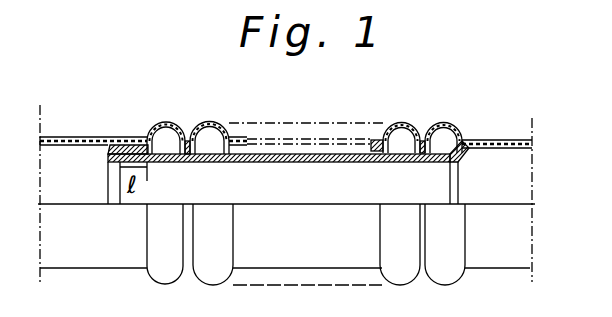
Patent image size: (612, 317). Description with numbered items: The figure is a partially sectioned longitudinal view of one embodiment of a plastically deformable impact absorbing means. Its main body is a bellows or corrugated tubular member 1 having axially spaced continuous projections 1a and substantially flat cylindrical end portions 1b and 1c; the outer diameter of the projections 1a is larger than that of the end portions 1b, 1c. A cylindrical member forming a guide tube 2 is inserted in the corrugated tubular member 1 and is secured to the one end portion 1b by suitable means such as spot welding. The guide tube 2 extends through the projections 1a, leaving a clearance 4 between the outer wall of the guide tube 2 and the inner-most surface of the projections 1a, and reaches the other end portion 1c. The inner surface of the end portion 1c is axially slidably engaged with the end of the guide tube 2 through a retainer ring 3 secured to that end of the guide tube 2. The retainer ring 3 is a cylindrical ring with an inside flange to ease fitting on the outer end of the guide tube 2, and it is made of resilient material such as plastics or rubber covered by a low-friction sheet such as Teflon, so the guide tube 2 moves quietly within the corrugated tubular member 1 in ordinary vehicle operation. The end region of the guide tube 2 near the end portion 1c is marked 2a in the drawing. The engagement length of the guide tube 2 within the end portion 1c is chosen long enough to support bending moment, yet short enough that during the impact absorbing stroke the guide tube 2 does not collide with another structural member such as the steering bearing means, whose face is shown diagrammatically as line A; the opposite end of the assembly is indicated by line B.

The corrugated tubular member 1 is at (286, 116).
The projections 1a is at (169, 124).
The end portion 1b is at (478, 138).
The end portion 1c is at (69, 137).
The guide tube 2 is at (289, 152).
The end portion of inner tube 2a is at (108, 153).
The retainer ring 3 is at (128, 144).
The clearance 4 is at (372, 150).
The line A is at (39, 177).
The section line B is at (532, 184).